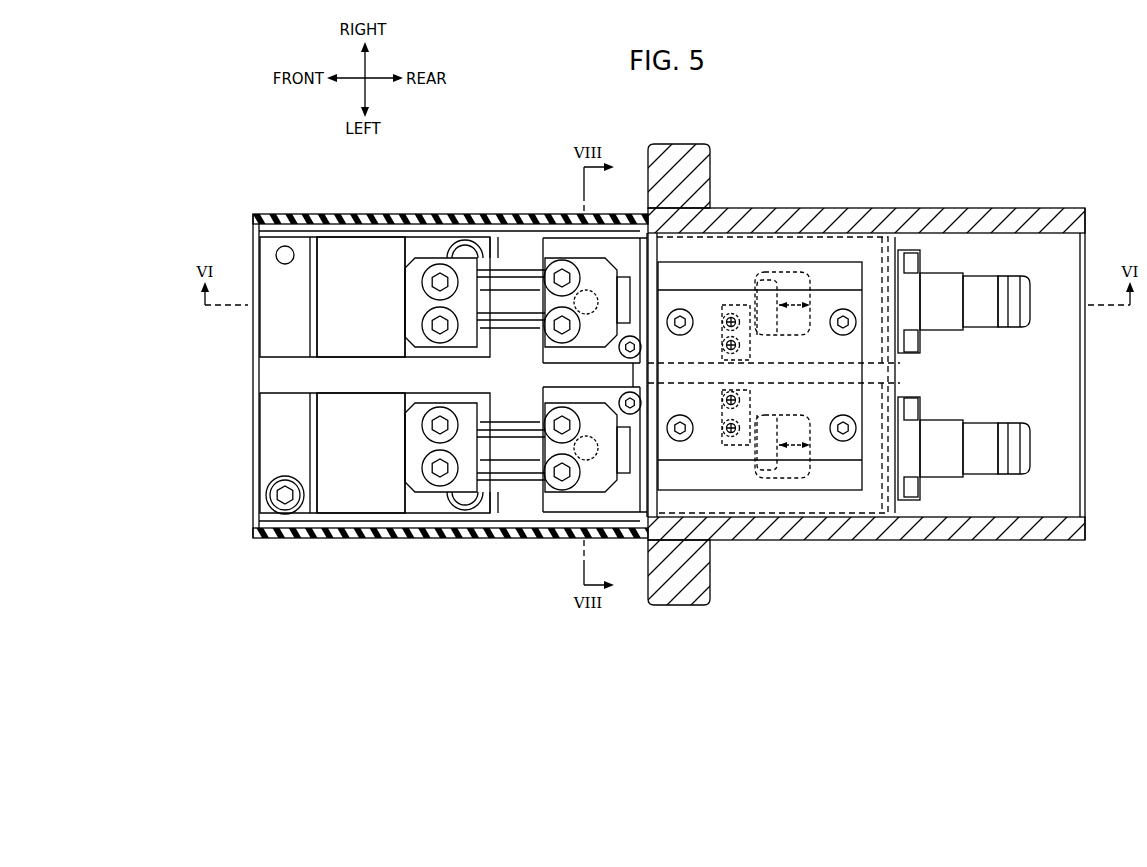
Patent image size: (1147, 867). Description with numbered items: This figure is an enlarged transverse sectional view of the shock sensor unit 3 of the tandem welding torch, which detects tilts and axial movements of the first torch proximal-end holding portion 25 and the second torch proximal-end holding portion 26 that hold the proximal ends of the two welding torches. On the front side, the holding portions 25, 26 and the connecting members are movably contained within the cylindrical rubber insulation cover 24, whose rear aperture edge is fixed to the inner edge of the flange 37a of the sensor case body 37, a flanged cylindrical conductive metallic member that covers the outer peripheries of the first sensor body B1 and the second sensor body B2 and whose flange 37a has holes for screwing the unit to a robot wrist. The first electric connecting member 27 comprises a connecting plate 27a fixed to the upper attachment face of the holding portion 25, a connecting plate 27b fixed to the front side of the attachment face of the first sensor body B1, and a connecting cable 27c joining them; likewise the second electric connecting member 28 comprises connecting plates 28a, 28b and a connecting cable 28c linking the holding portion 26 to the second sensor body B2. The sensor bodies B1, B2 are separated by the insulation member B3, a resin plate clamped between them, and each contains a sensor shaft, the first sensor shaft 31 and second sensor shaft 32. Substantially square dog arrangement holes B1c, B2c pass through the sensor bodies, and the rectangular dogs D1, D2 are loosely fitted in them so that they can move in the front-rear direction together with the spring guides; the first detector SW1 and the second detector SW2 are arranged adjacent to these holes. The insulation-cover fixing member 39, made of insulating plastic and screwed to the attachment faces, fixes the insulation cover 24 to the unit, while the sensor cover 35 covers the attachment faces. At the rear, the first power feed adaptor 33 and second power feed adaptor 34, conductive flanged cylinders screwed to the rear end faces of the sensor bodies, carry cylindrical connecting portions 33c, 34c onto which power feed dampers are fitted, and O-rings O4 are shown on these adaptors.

The shock sensor unit 3 is at (856, 140).
The insulation cover 24 is at (340, 243).
The first torch proximal-end holding portion 25 is at (283, 240).
The second torch proximal-end holding portion 26 is at (340, 480).
The first electric connecting member 27 is at (433, 176).
The connecting plate 27a is at (430, 262).
The connecting plate 27b is at (575, 250).
The connecting cable 27c is at (527, 272).
The second electric connecting member 28 is at (555, 583).
The connecting plate 28a is at (430, 490).
The connecting plate 28b is at (575, 500).
The connecting cable 28c is at (515, 470).
The first sensor shaft 31 is at (513, 305).
The second sensor shaft 32 is at (513, 447).
The first power feed adaptor 33 is at (940, 282).
The cylindrical connecting portion 33c is at (982, 282).
The second power feed adaptor 34 is at (940, 468).
The cylindrical connecting portion 34c is at (982, 468).
The sensor cover 35 is at (705, 262).
The sensor case body 37 is at (1067, 206).
The flange 37a is at (683, 144).
The insulation-cover fixing member 39 is at (633, 457).
The first sensor body B1 is at (888, 240).
The dog arrangement hole B1c is at (805, 275).
The second sensor body B2 is at (890, 513).
The dog arrangement hole B2c is at (808, 478).
The insulation member B3 is at (890, 372).
The dog D1 is at (790, 300).
The dog D2 is at (795, 450).
The O-ring O4 is at (1010, 278).
The first detector SW1 is at (738, 305).
The second detector SW2 is at (740, 445).